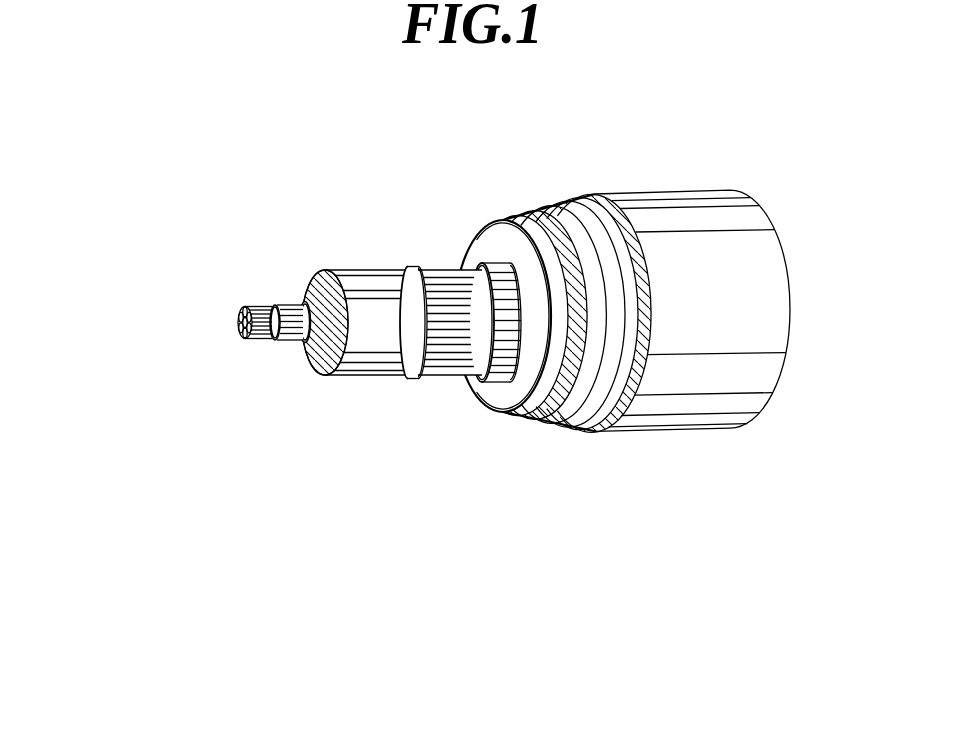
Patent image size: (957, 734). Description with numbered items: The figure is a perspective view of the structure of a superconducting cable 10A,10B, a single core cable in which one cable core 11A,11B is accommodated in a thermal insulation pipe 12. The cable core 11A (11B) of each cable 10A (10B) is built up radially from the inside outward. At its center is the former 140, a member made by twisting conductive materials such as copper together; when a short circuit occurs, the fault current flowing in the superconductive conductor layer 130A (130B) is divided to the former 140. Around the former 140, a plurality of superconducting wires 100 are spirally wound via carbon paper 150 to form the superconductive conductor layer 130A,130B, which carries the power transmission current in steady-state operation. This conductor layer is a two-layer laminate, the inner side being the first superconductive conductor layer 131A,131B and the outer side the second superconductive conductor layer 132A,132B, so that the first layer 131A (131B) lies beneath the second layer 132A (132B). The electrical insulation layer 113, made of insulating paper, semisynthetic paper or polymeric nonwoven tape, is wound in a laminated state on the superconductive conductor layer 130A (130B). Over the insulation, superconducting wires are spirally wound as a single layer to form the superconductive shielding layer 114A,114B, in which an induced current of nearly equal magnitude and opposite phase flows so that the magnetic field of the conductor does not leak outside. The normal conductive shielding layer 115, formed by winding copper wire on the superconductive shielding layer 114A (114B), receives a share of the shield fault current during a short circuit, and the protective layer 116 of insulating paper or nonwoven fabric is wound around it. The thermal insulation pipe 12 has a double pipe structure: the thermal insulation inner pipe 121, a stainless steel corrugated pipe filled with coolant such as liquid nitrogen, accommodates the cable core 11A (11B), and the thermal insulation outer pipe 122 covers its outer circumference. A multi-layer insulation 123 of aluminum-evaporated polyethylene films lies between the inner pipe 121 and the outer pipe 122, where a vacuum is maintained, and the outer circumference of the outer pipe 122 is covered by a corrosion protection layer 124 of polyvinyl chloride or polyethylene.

The superconducting cable 10A,10B is at (454, 324).
The superconducting cable 10A is at (454, 324).
The superconducting cable 10B is at (407, 200).
The thermal insulation pipe 12 is at (712, 110).
The thermal insulation inner pipe 121 is at (500, 221).
The thermal insulation outer pipe 122 is at (598, 221).
The multi-layer insulation (superinsulation) 123 is at (553, 212).
The corrosion protection layer 124 is at (645, 222).
The cable core 11A,11B is at (417, 367).
The cable core 11A is at (417, 367).
The cable core 11B is at (712, 513).
The electrical insulation layer 113 is at (385, 366).
The superconductive shielding layer 114A,114B is at (507, 392).
The superconductive shielding layer 114A is at (507, 392).
The superconductive shielding layer 114B is at (437, 368).
The normal conductive shielding layer 115 is at (505, 365).
The protective layer 116 is at (530, 372).
The superconductive conductor layer 130A,130B is at (254, 342).
The superconductive conductor layer 130A is at (254, 342).
The superconductive conductor layer 130B is at (390, 466).
The superconducting wire 100 is at (315, 310).
The first superconductive conductor layer 131A,131B is at (211, 389).
The first superconductive conductor layer 131A is at (211, 389).
The first superconductive conductor layer 131B is at (287, 340).
The second superconductive conductor layer 132A,132B is at (327, 388).
The second superconductive conductor layer 132A is at (327, 388).
The second superconductive conductor layer 132B is at (312, 340).
The former 140 is at (253, 305).
The carbon paper 150 is at (274, 307).